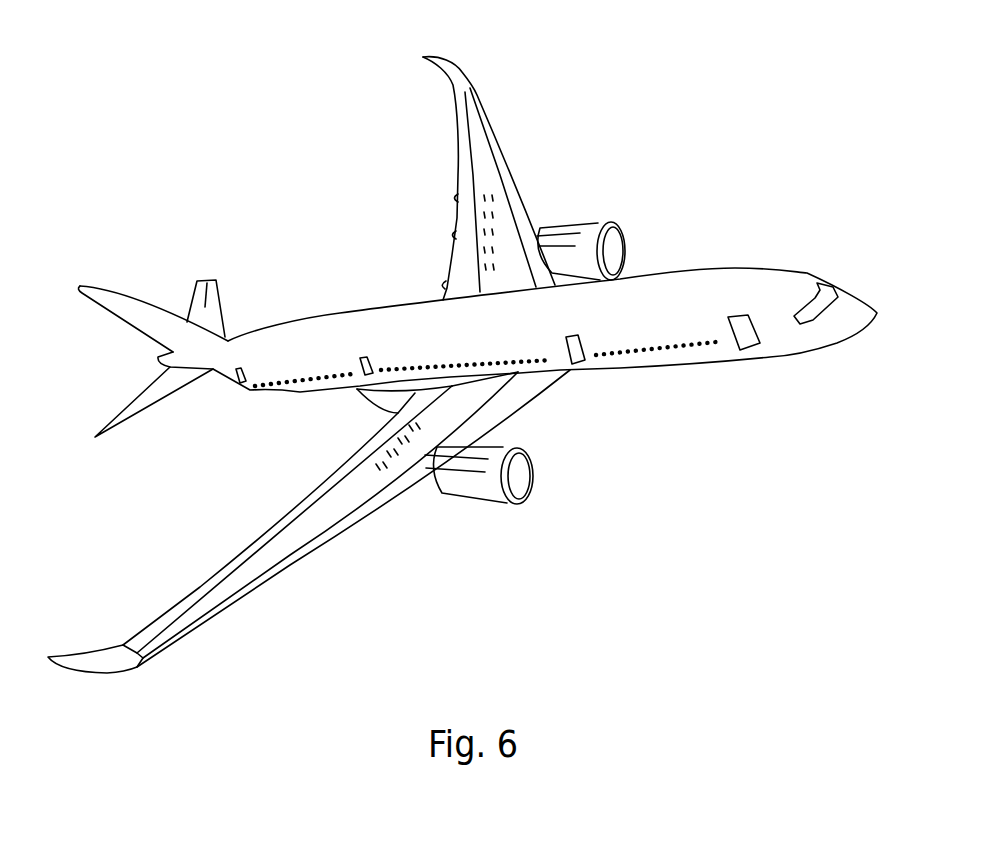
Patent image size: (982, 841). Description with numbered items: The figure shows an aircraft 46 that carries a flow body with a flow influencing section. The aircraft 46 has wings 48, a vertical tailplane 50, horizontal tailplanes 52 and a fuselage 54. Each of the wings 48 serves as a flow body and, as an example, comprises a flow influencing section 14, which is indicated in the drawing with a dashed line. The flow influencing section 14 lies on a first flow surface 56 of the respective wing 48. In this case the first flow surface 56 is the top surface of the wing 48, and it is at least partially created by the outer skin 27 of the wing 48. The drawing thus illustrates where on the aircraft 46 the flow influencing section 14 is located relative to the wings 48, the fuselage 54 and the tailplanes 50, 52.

The aircraft 46 is at (675, 148).
The wing 48 is at (487, 170).
The flow influencing section 14 is at (502, 219).
The fuselage 54 is at (752, 282).
The vertical tailplane 50 is at (130, 305).
The horizontal tailplane 52 is at (214, 286).
The outer skin 27 is at (489, 286).
The first flow surface 56 is at (462, 403).